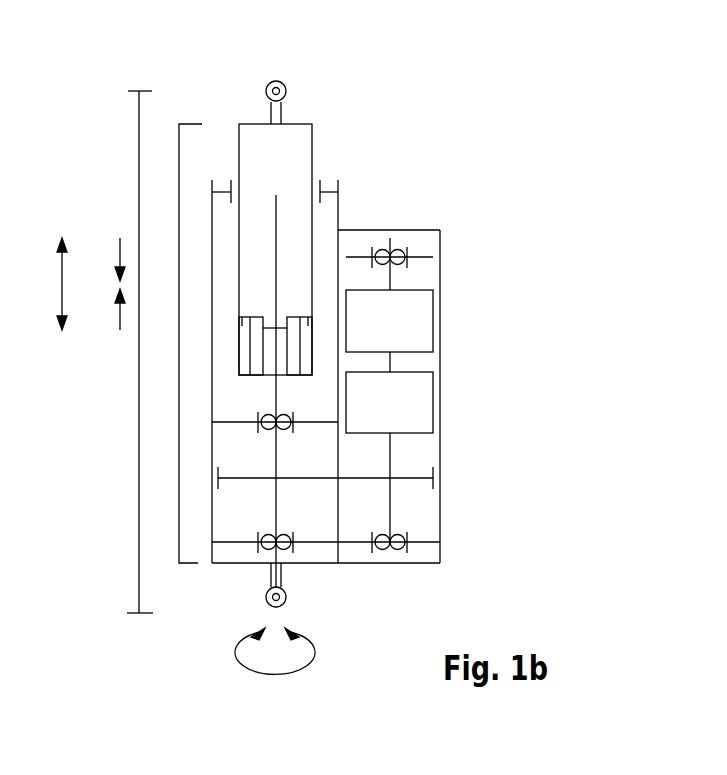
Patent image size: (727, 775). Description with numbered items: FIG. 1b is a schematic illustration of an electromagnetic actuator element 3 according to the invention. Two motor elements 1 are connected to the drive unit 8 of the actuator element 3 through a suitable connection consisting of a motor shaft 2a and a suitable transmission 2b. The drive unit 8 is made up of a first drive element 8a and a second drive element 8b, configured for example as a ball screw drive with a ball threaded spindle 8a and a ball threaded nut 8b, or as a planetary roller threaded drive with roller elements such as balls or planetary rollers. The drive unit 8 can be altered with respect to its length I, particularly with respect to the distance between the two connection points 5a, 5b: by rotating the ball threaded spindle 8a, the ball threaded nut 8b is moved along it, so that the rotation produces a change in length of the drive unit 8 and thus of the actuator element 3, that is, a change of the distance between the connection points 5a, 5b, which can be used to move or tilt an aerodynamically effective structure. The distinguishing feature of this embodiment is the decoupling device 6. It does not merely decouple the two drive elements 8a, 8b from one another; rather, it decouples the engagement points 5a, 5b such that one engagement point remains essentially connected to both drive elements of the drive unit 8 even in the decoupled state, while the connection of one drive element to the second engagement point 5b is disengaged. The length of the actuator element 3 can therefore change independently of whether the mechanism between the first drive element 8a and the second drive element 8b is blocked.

The motor element 1 is at (408, 322).
The motor shaft 2a is at (390, 506).
The transmission 2b is at (363, 479).
The actuator element 3 is at (410, 143).
The connection point 5a is at (287, 593).
The connection point 5b is at (286, 89).
The decoupling device 6 is at (308, 317).
The drive unit 8 is at (179, 506).
The first drive element 8a is at (274, 502).
The second drive element 8b is at (288, 372).
The length I is at (91, 284).